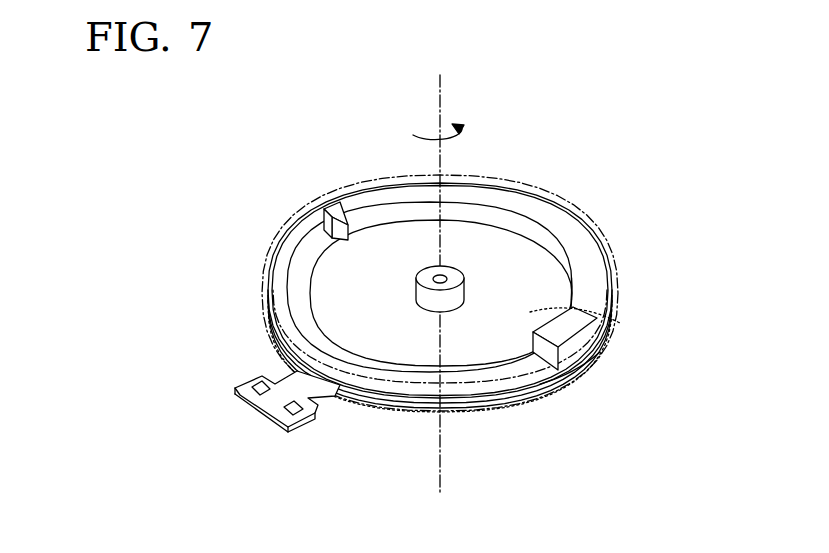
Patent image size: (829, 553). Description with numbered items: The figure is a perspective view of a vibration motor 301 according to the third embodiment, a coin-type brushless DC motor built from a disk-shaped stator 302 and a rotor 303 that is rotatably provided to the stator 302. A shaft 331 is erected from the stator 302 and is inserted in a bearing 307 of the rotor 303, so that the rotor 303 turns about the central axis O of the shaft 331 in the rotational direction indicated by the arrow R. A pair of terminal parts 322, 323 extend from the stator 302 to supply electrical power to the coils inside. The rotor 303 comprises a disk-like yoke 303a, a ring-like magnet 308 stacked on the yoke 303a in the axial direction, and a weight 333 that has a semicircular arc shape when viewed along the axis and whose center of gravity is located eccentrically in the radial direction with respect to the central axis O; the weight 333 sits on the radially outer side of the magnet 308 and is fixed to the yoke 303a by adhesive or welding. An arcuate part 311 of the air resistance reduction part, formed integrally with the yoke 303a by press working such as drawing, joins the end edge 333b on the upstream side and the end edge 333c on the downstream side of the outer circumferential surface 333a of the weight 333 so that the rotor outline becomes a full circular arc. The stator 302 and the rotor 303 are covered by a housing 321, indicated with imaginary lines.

The vibration motor 301 is at (321, 158).
The stator 302 is at (550, 393).
The rotor 303 is at (606, 232).
The yoke 303a is at (618, 323).
The bearing 307 is at (421, 274).
The magnet 308 is at (560, 378).
The arcuate part 311 is at (477, 393).
The housing 321 is at (618, 272).
The terminal part 322 is at (257, 386).
The terminal part 323 is at (295, 410).
The shaft 331 is at (444, 277).
The weight 333 is at (555, 222).
The outer circumferential surface 333a is at (538, 193).
The end edge 333b is at (340, 230).
The end edge 333c is at (513, 347).
The central axis O is at (441, 93).
The rotational direction R is at (426, 135).